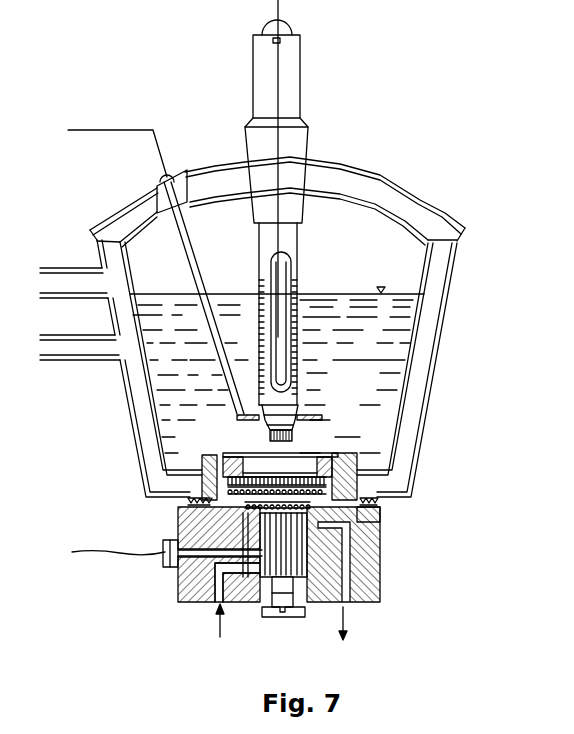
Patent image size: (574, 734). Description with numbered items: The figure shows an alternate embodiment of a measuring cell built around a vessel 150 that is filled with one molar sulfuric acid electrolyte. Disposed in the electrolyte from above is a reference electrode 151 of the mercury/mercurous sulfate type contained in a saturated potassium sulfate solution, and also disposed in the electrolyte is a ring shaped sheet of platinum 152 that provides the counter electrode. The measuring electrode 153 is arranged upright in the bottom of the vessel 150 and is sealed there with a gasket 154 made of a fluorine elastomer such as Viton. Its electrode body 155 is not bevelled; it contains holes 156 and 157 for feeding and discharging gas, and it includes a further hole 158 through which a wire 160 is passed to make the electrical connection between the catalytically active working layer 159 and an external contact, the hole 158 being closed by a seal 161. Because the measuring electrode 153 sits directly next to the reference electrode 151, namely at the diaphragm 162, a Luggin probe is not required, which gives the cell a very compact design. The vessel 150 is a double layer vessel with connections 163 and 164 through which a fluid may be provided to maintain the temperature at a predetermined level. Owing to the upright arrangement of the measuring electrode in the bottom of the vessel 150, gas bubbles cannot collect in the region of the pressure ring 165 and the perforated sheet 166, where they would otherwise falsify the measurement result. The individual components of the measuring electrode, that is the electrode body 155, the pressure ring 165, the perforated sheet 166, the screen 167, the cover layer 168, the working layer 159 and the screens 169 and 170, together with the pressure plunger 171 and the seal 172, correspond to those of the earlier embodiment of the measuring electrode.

The vessel 150 is at (455, 285).
The reference electrode 151 is at (303, 70).
The ring shaped sheet of platinum 152 is at (318, 410).
The measuring electrode 153 is at (384, 517).
The gasket 154 is at (190, 497).
The electrode body 155 is at (197, 522).
The hole 156 is at (217, 594).
The hole 157 is at (353, 603).
The further hole 158 is at (177, 592).
The catalytically active working layer 159 is at (322, 500).
The wire 160 is at (112, 548).
The seal 161 is at (165, 570).
The diaphragm 162 is at (262, 435).
The connection 163 is at (86, 358).
The connection 164 is at (70, 272).
The pressure ring 165 is at (322, 457).
The perforated sheet 166 is at (256, 470).
The screen 167 is at (362, 500).
The cover layer 168 is at (325, 485).
The screen 169 is at (320, 508).
The screen 170 is at (322, 513).
The pressure plunger 171 is at (293, 585).
The seal 172 is at (275, 617).